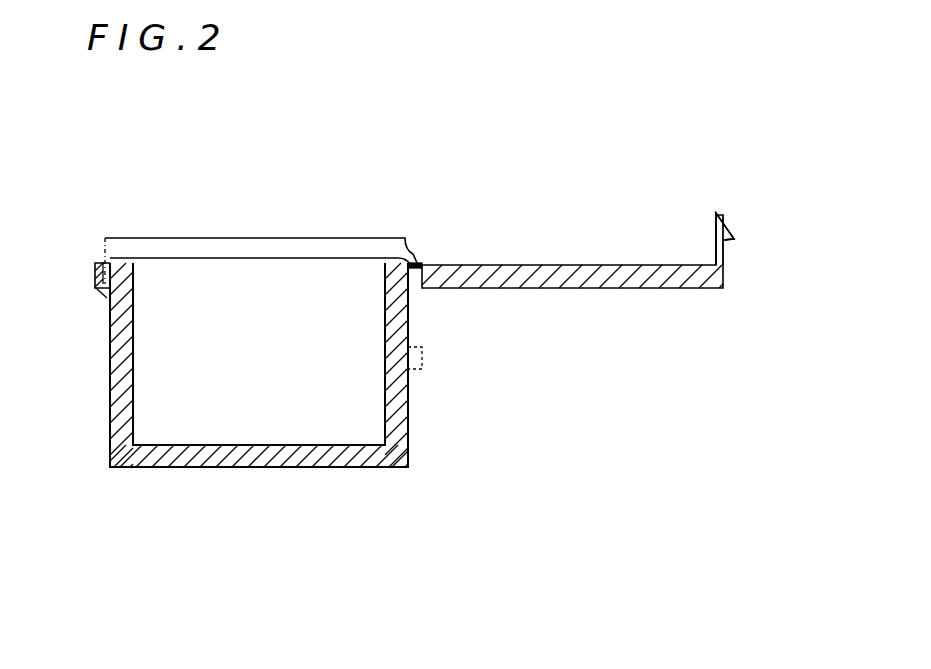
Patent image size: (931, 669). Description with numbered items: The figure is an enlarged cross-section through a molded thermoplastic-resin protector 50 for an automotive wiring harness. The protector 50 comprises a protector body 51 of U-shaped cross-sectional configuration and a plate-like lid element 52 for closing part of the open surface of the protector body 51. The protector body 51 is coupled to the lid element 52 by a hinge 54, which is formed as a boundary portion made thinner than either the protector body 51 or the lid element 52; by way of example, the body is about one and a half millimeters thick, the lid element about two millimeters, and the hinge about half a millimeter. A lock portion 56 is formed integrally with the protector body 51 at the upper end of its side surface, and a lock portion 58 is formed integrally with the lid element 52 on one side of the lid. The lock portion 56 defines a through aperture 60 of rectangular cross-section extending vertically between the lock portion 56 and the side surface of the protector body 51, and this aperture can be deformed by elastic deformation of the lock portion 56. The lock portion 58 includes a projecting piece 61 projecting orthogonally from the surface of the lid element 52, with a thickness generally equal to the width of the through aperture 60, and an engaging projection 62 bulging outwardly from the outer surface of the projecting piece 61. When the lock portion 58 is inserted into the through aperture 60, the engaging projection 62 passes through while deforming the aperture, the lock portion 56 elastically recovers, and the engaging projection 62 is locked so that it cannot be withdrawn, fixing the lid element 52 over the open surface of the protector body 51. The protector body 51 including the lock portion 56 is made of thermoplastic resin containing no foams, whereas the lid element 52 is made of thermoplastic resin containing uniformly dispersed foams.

The protector 50 is at (430, 248).
The protector body 51 is at (258, 462).
The lid element 52 is at (225, 237).
The hinge 54 is at (415, 268).
The lock portion 56 is at (97, 268).
The lock portion 58 is at (107, 298).
The through aperture 60 is at (105, 238).
The projecting piece 61 is at (723, 262).
The engaging projection 62 is at (725, 218).